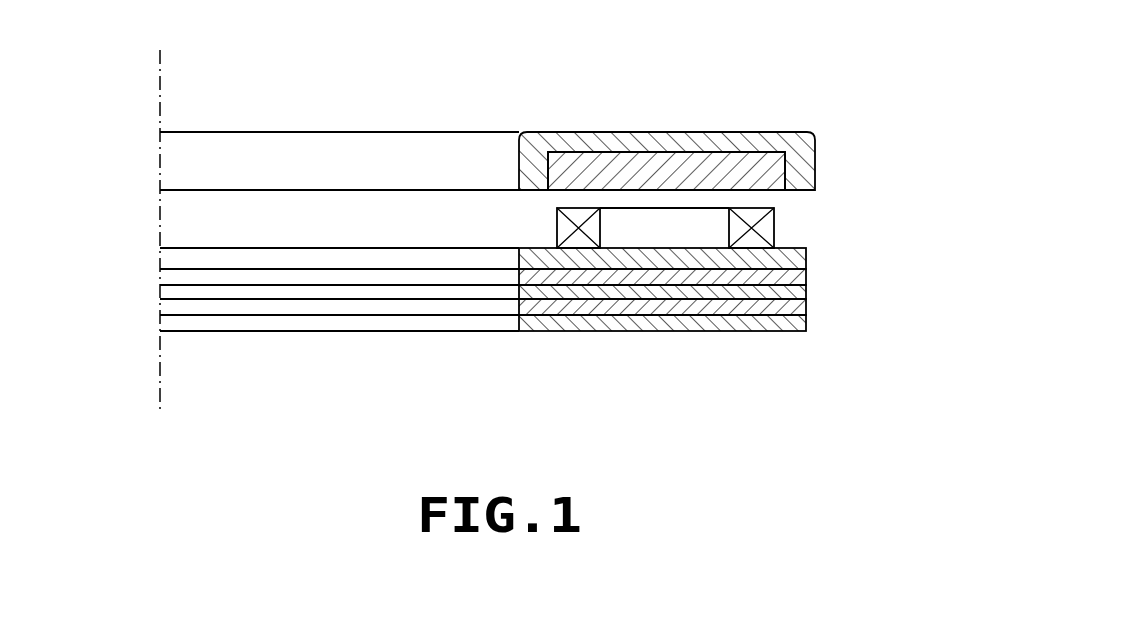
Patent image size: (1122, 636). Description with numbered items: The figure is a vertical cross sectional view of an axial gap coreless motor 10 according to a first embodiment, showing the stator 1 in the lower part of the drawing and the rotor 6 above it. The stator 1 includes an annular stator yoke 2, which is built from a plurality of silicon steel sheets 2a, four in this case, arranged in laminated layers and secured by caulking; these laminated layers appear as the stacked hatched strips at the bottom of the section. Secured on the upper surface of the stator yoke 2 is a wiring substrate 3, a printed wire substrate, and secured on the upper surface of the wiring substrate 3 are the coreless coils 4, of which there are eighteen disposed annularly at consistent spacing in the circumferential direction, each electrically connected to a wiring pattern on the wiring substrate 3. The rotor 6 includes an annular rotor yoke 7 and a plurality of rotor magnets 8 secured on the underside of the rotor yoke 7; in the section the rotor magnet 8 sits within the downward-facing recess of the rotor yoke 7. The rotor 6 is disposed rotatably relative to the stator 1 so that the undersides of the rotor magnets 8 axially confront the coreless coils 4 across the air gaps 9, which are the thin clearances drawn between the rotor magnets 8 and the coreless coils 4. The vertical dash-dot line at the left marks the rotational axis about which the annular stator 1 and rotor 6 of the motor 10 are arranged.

The axial gap coreless motor 10 is at (582, 107).
The rotor 6 is at (520, 125).
The rotor yoke 7 is at (733, 138).
The rotor magnet 8 is at (660, 168).
The air gap 9 is at (573, 198).
The stator 1 is at (531, 286).
The coreless coil 4 is at (777, 218).
The wiring substrate 3 is at (800, 255).
The stator yoke 2 is at (689, 332).
The silicon steel sheet 2a is at (641, 277).